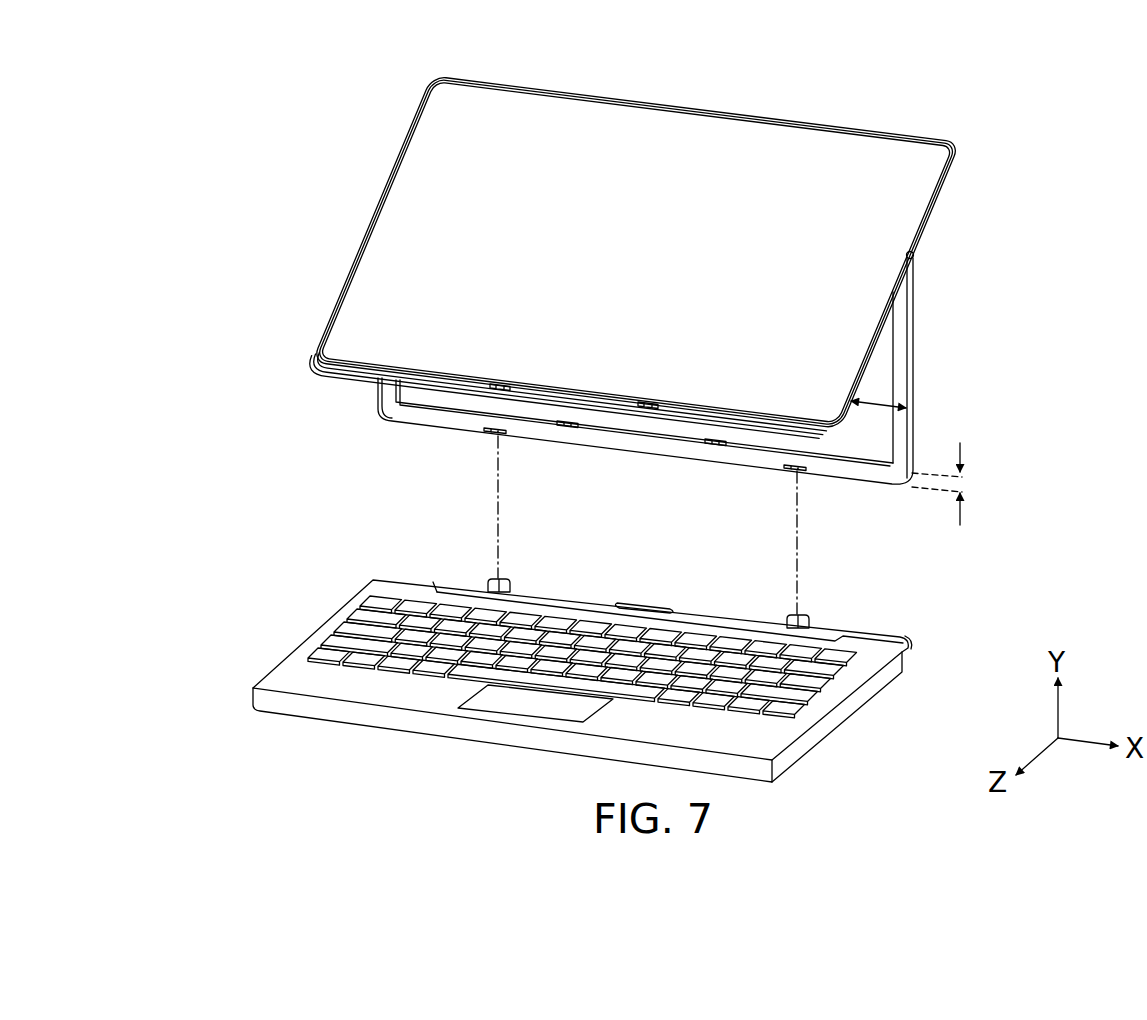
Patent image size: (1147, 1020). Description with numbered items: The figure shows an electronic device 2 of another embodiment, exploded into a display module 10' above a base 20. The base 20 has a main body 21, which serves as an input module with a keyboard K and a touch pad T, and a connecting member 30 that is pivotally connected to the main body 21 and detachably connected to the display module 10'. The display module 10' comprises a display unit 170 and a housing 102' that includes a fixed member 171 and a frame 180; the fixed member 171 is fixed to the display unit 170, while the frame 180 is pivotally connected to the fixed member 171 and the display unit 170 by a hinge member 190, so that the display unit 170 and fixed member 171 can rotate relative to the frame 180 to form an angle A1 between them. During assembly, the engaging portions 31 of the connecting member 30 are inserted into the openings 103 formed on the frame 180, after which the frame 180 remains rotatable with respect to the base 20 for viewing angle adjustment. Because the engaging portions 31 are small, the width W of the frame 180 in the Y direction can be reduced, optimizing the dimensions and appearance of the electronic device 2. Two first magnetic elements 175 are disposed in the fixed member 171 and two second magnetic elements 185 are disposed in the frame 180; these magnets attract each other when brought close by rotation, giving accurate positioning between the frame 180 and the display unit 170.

The electronic device 2 is at (210, 102).
The display module 10' is at (715, 345).
The display unit 170 is at (368, 220).
The fixed member 171 is at (937, 199).
The housing 102' is at (755, 347).
The hinge member 190 is at (915, 258).
The frame 180 is at (917, 318).
The first magnetic elements 175 is at (496, 381).
The second magnetic elements 185 is at (565, 429).
The openings 103 is at (485, 434).
The base 20 is at (310, 620).
The main body 21 is at (768, 733).
The connecting member 30 is at (916, 643).
The engaging portions 31 is at (486, 580).
The keyboard K is at (368, 612).
The touch pad T is at (510, 706).
The angle A1 is at (878, 423).
The width W is at (956, 484).